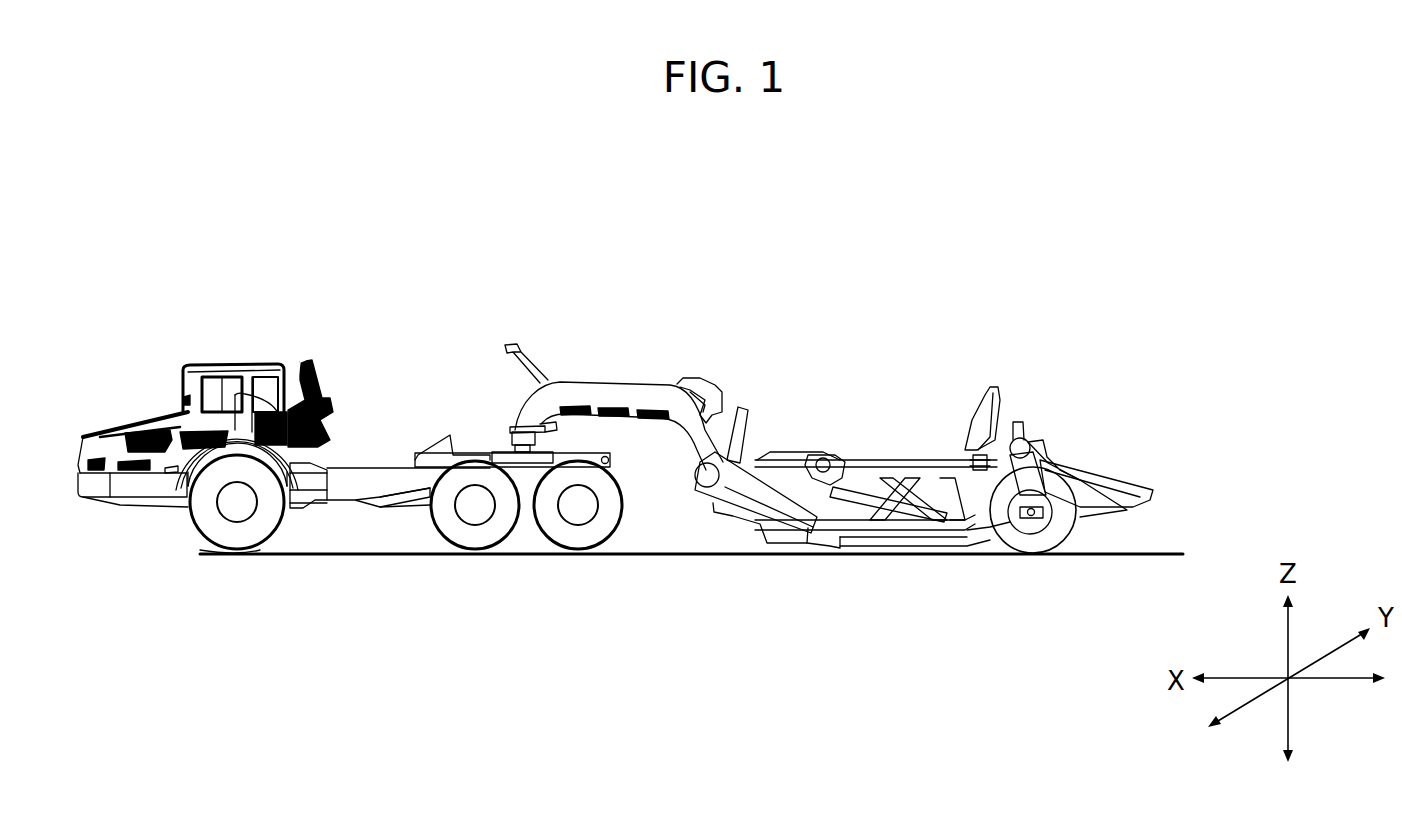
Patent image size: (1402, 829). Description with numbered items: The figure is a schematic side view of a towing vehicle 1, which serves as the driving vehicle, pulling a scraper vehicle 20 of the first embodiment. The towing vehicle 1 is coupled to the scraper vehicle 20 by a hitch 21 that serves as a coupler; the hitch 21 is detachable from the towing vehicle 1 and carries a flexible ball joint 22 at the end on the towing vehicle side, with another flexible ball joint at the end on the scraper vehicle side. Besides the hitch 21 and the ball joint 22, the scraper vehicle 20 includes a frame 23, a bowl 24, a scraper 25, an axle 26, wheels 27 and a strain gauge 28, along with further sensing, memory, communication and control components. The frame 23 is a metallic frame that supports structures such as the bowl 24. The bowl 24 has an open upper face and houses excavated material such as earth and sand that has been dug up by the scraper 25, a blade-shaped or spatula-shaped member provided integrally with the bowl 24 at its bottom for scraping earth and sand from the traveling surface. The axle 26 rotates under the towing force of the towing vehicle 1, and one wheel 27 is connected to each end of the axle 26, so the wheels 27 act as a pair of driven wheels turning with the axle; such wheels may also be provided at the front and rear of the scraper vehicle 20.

The towing vehicle 1 is at (194, 368).
The scraper vehicle 20 is at (1113, 285).
The hitch 21 is at (590, 393).
The flexible ball joint 22 is at (517, 433).
The frame 23 is at (762, 500).
The bowl 24 is at (780, 440).
The scraper 25 is at (840, 548).
The axle 26 is at (1028, 520).
The wheel 27 is at (1058, 538).
The strain gauge 28 is at (625, 408).